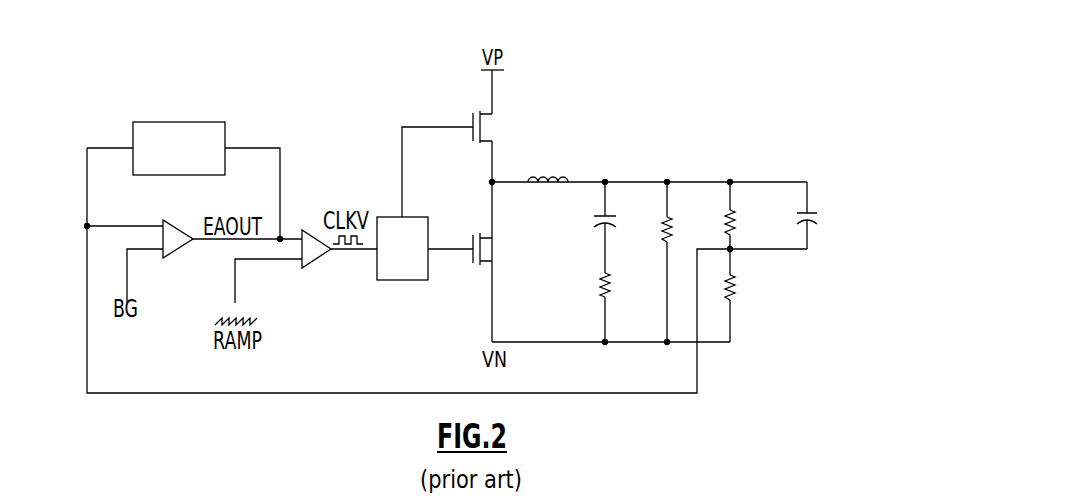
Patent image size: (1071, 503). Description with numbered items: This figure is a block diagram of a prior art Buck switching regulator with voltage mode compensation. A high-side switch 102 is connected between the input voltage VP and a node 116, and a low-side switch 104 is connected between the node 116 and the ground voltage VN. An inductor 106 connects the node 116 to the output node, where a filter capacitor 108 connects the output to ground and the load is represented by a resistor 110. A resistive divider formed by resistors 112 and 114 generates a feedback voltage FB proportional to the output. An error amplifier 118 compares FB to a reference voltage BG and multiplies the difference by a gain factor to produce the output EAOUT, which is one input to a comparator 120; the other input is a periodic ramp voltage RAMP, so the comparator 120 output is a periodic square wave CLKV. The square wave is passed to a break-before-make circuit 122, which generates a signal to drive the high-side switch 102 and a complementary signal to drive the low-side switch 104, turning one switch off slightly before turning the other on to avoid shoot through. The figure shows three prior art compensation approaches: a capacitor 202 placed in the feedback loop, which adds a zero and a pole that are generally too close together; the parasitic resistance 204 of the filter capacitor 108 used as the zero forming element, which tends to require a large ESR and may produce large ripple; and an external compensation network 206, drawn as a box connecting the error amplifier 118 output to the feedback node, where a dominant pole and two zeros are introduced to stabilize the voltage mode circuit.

The switch 102 is at (487, 122).
The switch 104 is at (488, 253).
The inductor 106 is at (548, 180).
The filter capacitor 108 is at (596, 220).
The resistor 110 is at (666, 241).
The resistor 112 is at (735, 223).
The resistor 114 is at (735, 287).
The node 116 is at (492, 182).
The error amplifier 118 is at (170, 222).
The comparator 120 is at (315, 260).
The break-before-make circuit 122 is at (419, 273).
The capacitor 202 is at (813, 216).
The parasitic resistance 204 is at (601, 296).
The compensation network 206 is at (226, 132).